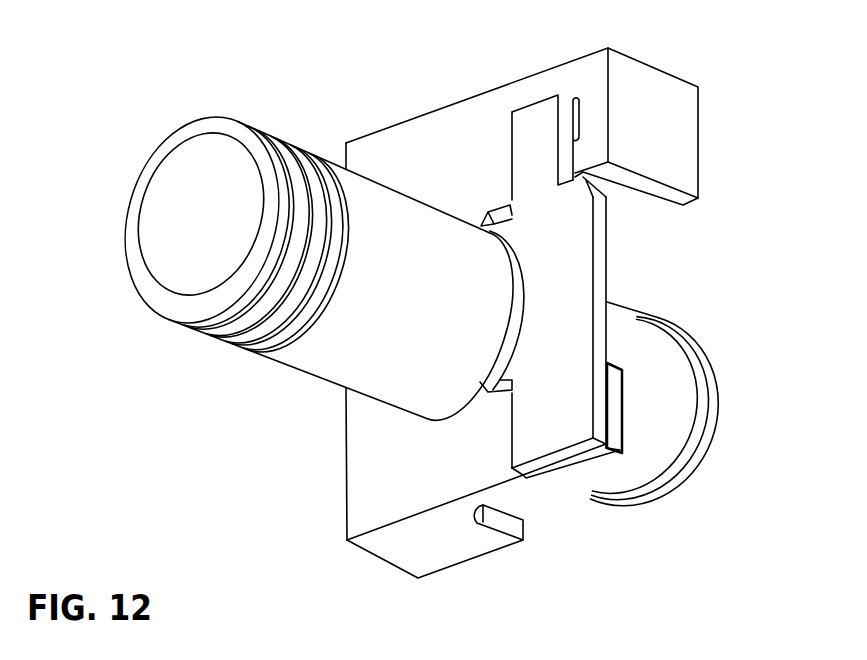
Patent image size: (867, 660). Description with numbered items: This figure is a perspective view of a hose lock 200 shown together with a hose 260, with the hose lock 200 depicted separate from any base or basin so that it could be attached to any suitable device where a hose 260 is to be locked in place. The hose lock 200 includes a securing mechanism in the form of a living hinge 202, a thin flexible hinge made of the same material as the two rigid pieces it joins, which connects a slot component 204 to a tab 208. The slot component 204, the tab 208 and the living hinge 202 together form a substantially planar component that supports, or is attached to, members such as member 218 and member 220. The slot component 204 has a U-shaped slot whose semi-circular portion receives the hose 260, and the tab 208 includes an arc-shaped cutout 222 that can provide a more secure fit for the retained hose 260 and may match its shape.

The hose lock 200 is at (330, 87).
The living hinge 202 is at (562, 480).
The slot component 204 is at (373, 467).
The tab 208 is at (583, 267).
The member 218 is at (405, 537).
The member 220 is at (662, 140).
The cutout 222 is at (528, 297).
The hose 260 is at (173, 242).